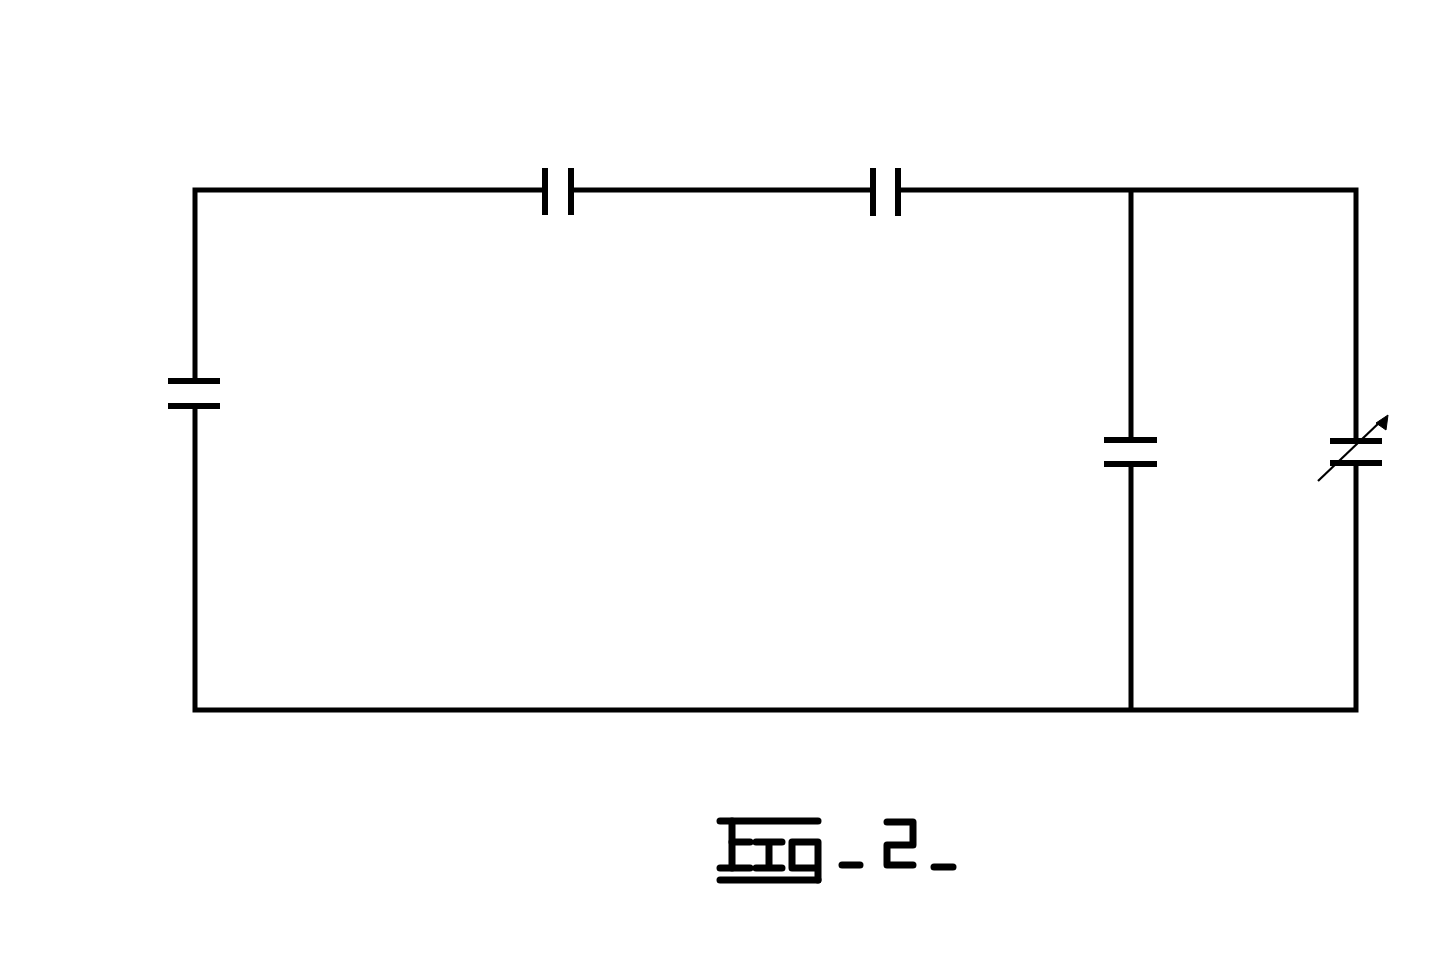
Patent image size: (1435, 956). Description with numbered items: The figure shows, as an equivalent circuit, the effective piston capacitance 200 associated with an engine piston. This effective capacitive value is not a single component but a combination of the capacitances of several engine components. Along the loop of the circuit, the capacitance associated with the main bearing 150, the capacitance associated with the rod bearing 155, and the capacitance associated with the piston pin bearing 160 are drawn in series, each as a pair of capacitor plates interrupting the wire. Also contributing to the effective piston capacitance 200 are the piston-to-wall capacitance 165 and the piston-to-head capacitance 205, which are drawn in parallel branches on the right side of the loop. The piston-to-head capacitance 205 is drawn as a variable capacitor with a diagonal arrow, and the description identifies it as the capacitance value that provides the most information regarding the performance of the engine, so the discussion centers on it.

The effective piston capacitance 200 is at (1244, 118).
The main bearing 150 is at (181, 380).
The rod bearing 155 is at (573, 177).
The piston pin bearing 160 is at (900, 178).
The piston-to-wall capacitance 165 is at (1134, 437).
The piston-to-head capacitance 205 is at (1365, 466).